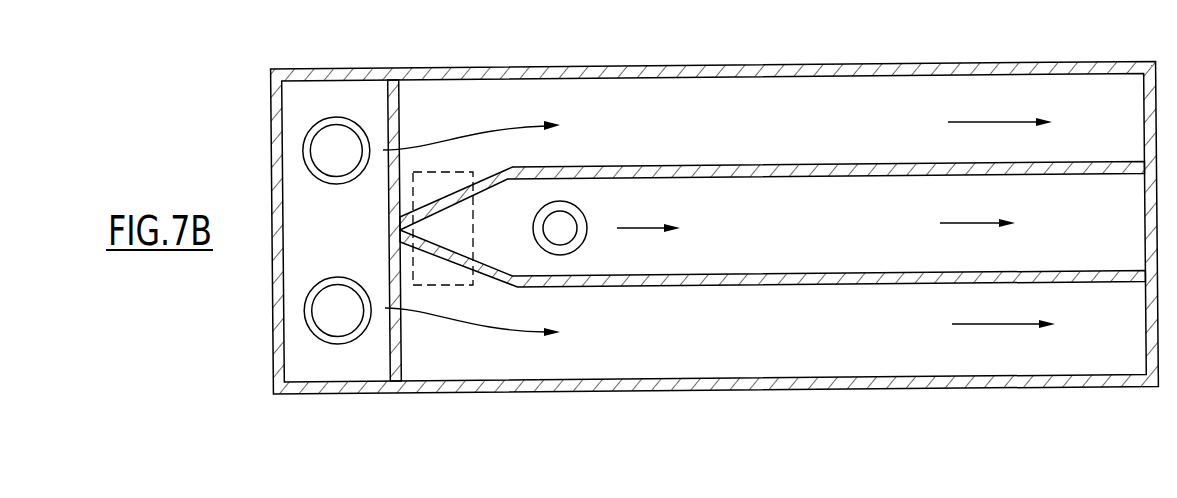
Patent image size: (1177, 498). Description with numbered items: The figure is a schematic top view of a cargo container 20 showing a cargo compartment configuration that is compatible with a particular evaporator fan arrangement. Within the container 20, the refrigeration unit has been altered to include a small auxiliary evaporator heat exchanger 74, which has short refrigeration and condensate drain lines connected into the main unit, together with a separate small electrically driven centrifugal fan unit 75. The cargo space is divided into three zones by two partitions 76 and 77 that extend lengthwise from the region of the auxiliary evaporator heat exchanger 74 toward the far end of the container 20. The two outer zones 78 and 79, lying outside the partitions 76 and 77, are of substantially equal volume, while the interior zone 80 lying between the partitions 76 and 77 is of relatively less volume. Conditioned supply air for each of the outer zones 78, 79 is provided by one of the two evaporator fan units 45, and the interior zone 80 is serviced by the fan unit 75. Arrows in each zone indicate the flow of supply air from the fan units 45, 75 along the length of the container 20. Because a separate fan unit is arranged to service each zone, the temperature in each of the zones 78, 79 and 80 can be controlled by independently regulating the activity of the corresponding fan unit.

The heat exchanger housing / duct 20 is at (999, 50).
The evaporator fan units 45 is at (290, 133).
The auxiliary evaporator heat exchanger 74 is at (465, 168).
The centrifugal fan unit 75 is at (582, 212).
The partition 76 is at (812, 167).
The partition 77 is at (670, 273).
The outer zone 78 is at (730, 134).
The outer zone 79 is at (633, 352).
The interior zone 80 is at (916, 213).